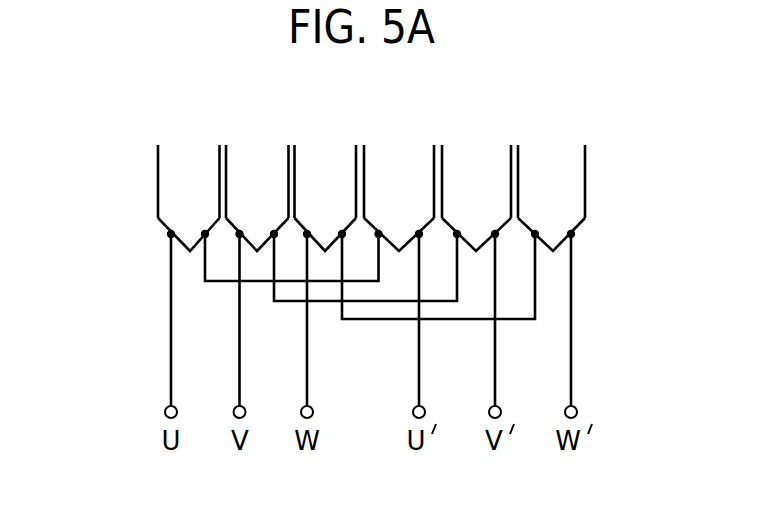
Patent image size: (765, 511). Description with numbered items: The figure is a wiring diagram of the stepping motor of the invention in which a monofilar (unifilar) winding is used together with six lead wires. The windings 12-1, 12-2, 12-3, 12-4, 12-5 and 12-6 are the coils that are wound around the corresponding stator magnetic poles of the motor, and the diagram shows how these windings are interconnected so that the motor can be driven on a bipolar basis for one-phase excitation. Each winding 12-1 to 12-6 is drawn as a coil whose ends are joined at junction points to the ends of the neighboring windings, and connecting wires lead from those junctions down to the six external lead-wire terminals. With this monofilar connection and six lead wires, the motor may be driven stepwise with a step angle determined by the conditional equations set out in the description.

The winding 12-1 is at (158, 161).
The winding 12-2 is at (230, 155).
The winding 12-3 is at (298, 157).
The winding 12-4 is at (364, 160).
The winding 12-5 is at (442, 160).
The winding 12-6 is at (585, 163).